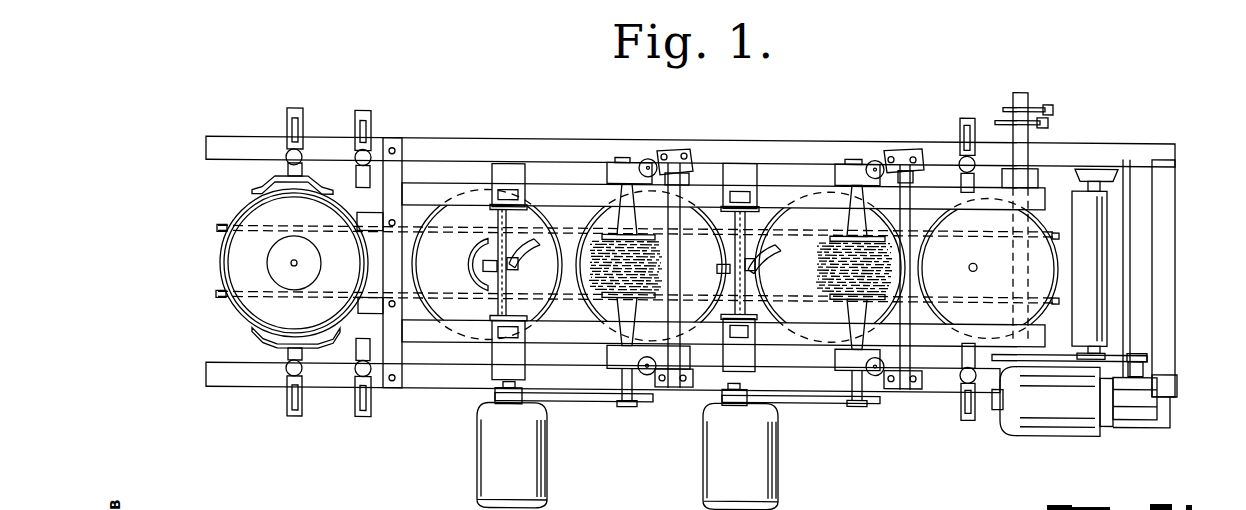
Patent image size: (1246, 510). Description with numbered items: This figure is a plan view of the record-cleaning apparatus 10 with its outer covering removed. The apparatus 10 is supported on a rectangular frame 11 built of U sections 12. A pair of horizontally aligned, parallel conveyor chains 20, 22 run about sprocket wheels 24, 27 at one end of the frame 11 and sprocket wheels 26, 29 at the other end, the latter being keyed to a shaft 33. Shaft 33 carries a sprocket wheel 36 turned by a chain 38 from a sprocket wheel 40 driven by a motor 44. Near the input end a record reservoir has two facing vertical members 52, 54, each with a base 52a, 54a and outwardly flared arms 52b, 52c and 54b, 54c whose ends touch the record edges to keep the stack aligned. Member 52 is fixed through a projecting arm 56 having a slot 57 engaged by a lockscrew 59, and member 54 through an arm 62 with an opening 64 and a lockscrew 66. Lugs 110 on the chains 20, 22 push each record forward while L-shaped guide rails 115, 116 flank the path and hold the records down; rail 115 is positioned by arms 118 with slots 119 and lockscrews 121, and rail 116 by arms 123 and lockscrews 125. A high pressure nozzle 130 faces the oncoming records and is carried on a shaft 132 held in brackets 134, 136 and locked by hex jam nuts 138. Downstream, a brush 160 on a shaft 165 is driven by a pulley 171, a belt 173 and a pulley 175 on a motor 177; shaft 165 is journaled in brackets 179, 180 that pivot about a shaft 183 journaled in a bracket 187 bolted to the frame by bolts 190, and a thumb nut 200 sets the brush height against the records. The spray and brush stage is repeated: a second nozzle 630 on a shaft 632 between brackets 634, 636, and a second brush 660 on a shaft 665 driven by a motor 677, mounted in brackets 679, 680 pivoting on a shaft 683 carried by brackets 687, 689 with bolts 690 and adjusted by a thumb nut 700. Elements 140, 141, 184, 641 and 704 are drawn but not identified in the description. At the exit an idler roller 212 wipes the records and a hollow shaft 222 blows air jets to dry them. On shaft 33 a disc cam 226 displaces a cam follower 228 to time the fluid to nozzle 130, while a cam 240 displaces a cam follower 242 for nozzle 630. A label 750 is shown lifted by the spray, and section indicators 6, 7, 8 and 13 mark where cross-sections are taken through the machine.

The apparatus 10 is at (149, 119).
The frame 11 is at (1162, 260).
The U sections 12 is at (704, 259).
The section line 13- 13 is at (982, 76).
The conveyor chain 20 is at (964, 262).
The conveyor chain 22 is at (967, 289).
The sprocket wheel 24 is at (275, 263).
The sprocket wheel 26 is at (1057, 228).
The sprocket wheel 27 is at (215, 297).
The sprocket wheel 29 is at (1044, 298).
The shaft 33 is at (1030, 91).
The sprocket wheel 36 is at (997, 388).
The chain 38 is at (1110, 343).
The sprocket wheel 40 is at (1147, 346).
The motor 44 is at (1068, 430).
The vertical member 52 is at (272, 389).
The base 52a is at (281, 355).
The outwardly flared arm 52b is at (264, 342).
The outwardly flared arm 52c is at (322, 348).
The vertical member 54 is at (275, 141).
The upper bracket arm 54a is at (308, 175).
The arm 54b is at (316, 175).
The arm 54c is at (262, 186).
The projecting arm 56 is at (299, 419).
The longitudinal slot 57 is at (296, 392).
The lockscrew 59 is at (296, 376).
The outwardly extending arm 62 is at (273, 120).
The elongated opening 64 is at (286, 128).
The lockscrew 66 is at (288, 153).
The projecting lugs 110 is at (734, 283).
The guide rail 115 is at (433, 341).
The guide rail 116 is at (440, 182).
The outwardly extending arms 118 is at (652, 405).
The slot 119 is at (367, 394).
The lockscrew 121 is at (357, 368).
The extending arms 123 is at (665, 133).
The lockscrews 125 is at (365, 150).
The high pressure nozzle 130 is at (519, 215).
The shaft 132 is at (480, 212).
The bracket 134 is at (495, 365).
The bracket 136 is at (528, 230).
The hex jam nuts 138 is at (518, 198).
The arm hole 140 is at (663, 151).
The bolt 141 is at (513, 258).
The brush 160 is at (537, 265).
The shaft 165 is at (632, 309).
The pulley 171 is at (574, 415).
The belt 173 is at (557, 402).
The pulley 175 is at (522, 388).
The motor 177 is at (477, 485).
The bracket 179 is at (613, 366).
The bracket 180 is at (608, 175).
The shaft 183 is at (680, 249).
The pivot arm 184 is at (695, 266).
The bracket 187 is at (683, 386).
The bolts 190 is at (700, 160).
The thumb nut 200 is at (643, 157).
The idler roller 212 is at (1100, 275).
The hollow shaft 222 is at (1130, 184).
The disc cam 226 is at (1044, 108).
The cam follower 228 is at (1056, 104).
The cam 240 is at (1045, 131).
The cam follower 242 is at (1050, 120).
The high pressure nozzle 630 is at (723, 260).
The shaft 632 is at (740, 263).
The bracket 634 is at (755, 354).
The bracket 636 is at (753, 167).
The handle 641 is at (755, 257).
The brush 660 is at (817, 249).
The shaft 665 is at (847, 311).
The motor 677 is at (768, 466).
The bracket 679 is at (838, 354).
The bracket 680 is at (833, 172).
The shaft 683 is at (910, 250).
The bracket 687 is at (900, 385).
The bracket 689 is at (916, 253).
The bolts 690 is at (913, 150).
The thumb nut 700 is at (873, 156).
The drive belt 704 is at (801, 446).
The label 750 is at (466, 247).
The section line 6- 6 is at (535, 98).
The section line 7- 7 is at (567, 178).
The section line 8- 8 is at (673, 131).